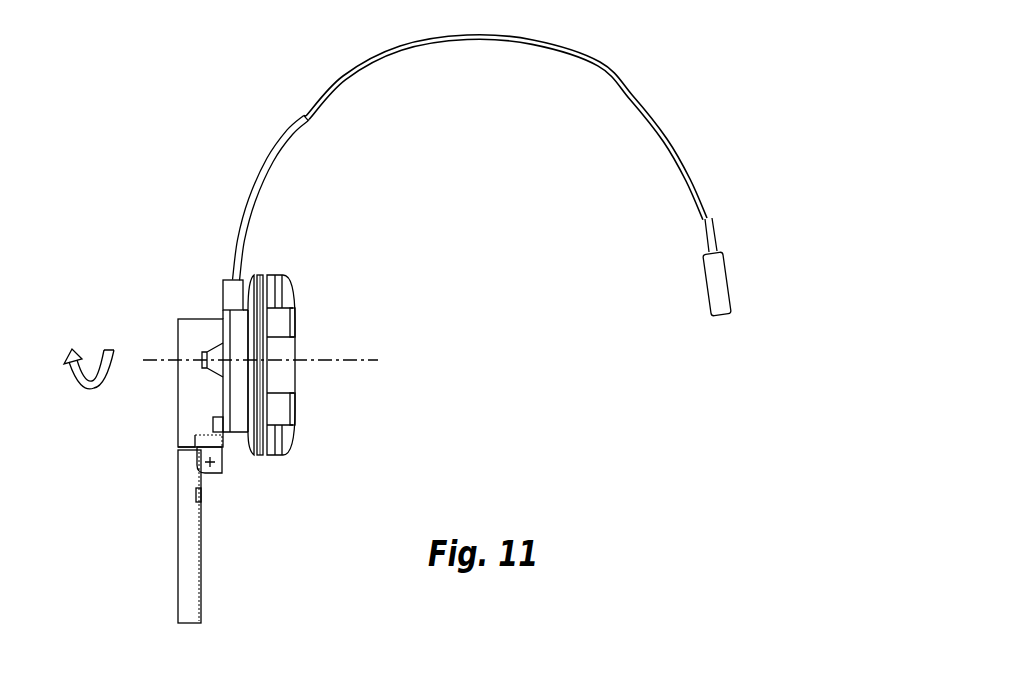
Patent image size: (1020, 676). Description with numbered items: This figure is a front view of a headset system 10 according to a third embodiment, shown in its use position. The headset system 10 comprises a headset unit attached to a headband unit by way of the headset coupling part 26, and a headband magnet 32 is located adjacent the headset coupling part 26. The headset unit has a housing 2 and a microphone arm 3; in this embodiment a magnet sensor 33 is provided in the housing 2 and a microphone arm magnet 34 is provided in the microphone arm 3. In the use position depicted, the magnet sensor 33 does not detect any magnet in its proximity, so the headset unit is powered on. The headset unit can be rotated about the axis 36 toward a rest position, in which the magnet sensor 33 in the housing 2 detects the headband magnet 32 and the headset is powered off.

The headset system 10 is at (609, 438).
The housing 2 is at (197, 328).
The microphone arm 3 is at (192, 598).
The headset coupling part 26 is at (241, 430).
The headband magnet 32 is at (250, 287).
The magnet sensor 33 is at (215, 425).
The microphone arm magnet 34 is at (197, 495).
The axis 36 is at (352, 361).